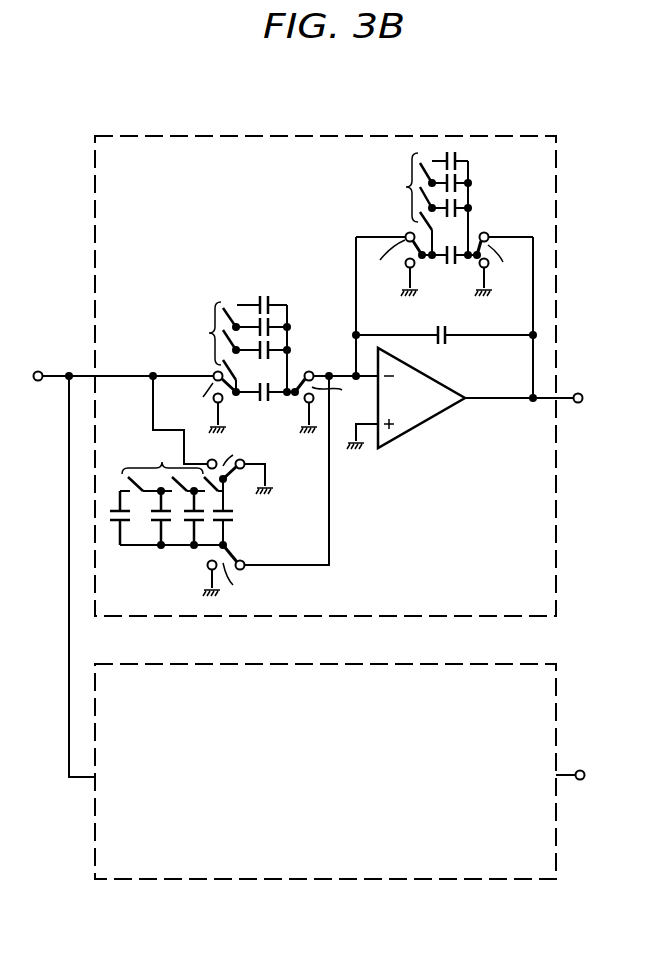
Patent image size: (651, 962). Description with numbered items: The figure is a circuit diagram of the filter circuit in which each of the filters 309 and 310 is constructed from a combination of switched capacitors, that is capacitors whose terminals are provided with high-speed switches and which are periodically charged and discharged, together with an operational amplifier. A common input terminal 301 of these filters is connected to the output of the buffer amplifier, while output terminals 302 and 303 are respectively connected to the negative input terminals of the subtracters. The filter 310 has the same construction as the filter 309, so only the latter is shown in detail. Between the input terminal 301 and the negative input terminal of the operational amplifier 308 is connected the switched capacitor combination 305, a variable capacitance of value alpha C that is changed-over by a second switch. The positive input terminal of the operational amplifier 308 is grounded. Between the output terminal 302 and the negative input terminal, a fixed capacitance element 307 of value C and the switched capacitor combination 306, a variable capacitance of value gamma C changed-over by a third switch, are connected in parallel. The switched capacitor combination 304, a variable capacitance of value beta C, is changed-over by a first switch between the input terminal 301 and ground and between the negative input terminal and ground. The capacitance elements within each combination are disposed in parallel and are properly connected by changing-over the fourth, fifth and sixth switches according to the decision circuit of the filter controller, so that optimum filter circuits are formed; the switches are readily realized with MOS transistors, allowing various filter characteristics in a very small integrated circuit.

The common input terminal 301 is at (40, 370).
The output terminal 302 is at (578, 392).
The output terminal 303 is at (580, 769).
The switched capacitor combination 304 is at (148, 528).
The switched capacitor combination 305 is at (278, 340).
The switched capacitor combination 306 is at (463, 197).
The fixed capacitance element 307 is at (441, 326).
The operational amplifier 308 is at (440, 380).
The filter 309 is at (295, 136).
The filter 310 is at (335, 879).